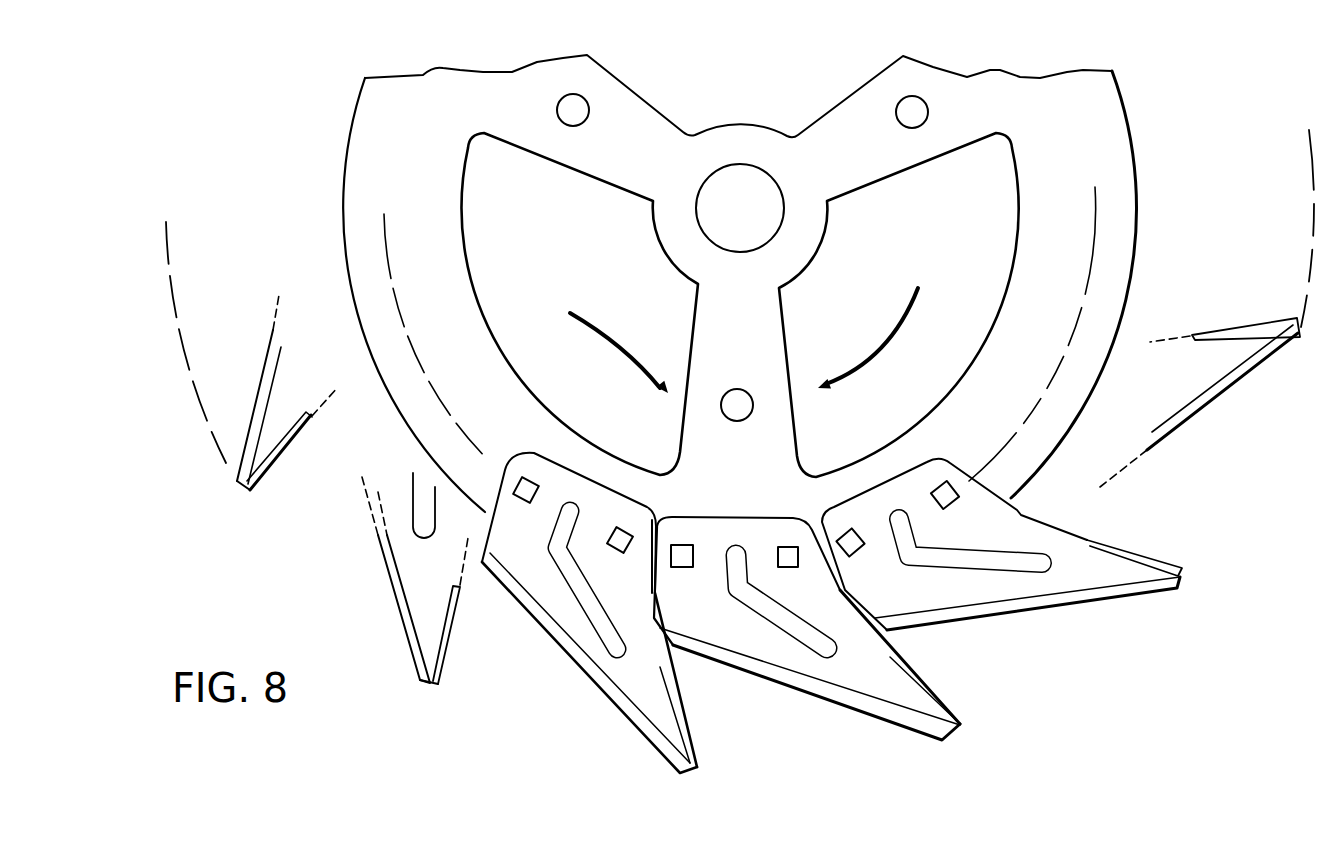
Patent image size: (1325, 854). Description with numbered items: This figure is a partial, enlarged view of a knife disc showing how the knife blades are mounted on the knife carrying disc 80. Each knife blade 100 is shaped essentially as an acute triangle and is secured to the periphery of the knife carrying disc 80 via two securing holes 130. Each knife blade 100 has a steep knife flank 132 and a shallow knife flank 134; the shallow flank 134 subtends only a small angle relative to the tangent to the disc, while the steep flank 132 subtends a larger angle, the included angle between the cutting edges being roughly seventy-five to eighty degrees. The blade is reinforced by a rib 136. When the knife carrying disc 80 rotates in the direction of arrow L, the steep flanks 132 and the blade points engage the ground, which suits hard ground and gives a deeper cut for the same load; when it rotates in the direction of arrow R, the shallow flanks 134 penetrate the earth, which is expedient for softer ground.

The knife carrying disc 80 is at (1117, 202).
The knife blade 100 is at (270, 440).
The securing holes 130 is at (627, 528).
The steep knife flank 132 is at (448, 636).
The shallow knife flank 134 is at (402, 605).
The rib 136 is at (608, 633).